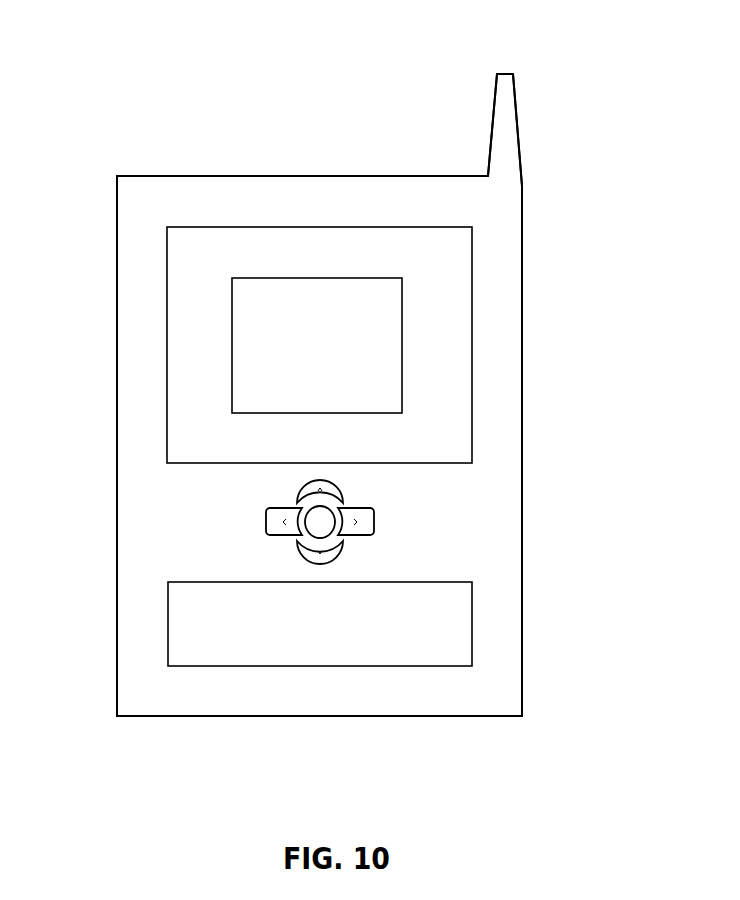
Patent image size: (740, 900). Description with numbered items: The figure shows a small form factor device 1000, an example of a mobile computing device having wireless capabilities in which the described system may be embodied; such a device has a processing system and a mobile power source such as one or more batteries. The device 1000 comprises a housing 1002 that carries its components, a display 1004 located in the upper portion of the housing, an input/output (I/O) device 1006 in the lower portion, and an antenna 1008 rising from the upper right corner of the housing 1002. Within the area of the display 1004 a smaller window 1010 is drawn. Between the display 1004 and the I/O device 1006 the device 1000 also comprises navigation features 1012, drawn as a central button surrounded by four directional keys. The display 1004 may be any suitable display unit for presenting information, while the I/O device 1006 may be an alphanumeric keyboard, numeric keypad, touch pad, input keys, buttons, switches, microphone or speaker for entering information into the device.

The small form factor device 1000 is at (124, 80).
The housing 1002 is at (522, 446).
The display 1004 is at (472, 241).
The input/output (I/O) device 1006 is at (472, 612).
The antenna 1008 is at (488, 120).
The screen window 1010 is at (402, 360).
The navigation features 1012 is at (400, 504).